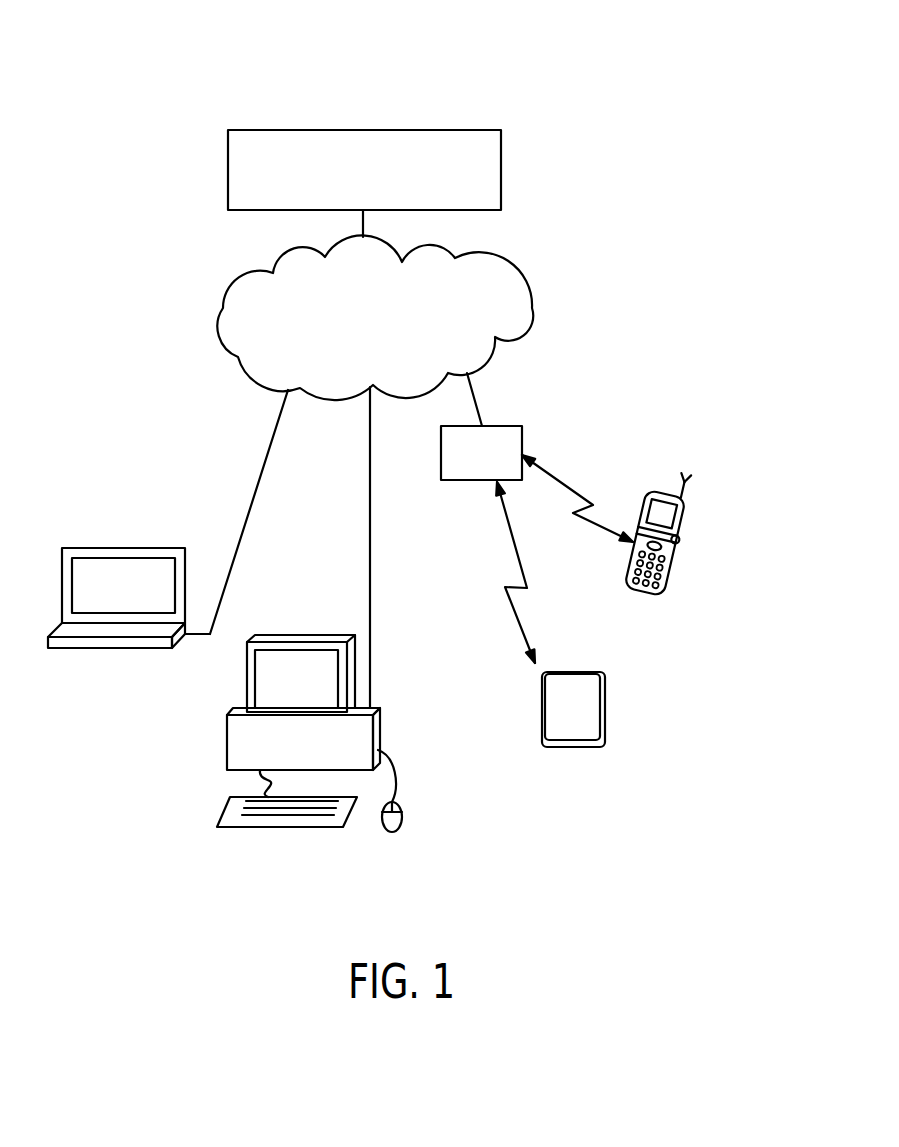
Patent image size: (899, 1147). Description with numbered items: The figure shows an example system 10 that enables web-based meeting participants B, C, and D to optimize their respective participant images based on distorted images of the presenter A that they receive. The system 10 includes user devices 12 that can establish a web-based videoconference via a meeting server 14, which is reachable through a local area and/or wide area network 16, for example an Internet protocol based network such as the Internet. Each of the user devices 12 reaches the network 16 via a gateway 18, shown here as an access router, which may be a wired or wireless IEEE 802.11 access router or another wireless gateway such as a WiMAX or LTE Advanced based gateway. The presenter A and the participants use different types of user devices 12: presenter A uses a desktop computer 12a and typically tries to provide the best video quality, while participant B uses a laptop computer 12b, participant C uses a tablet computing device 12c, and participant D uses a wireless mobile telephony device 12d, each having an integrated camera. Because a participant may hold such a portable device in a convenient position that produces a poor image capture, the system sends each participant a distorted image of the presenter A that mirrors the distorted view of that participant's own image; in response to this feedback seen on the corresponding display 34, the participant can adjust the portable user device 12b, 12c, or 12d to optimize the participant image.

The system 10 is at (687, 90).
The user device 12 is at (412, 669).
The desktop computer 12a is at (298, 633).
The laptop computer 12b is at (125, 547).
The tablet computing device 12c is at (560, 750).
The wireless mobile telephony device 12d is at (683, 532).
The meeting server 14 is at (502, 172).
The network 16 is at (533, 300).
The gateway 18 is at (522, 436).
The display 34 is at (87, 582).